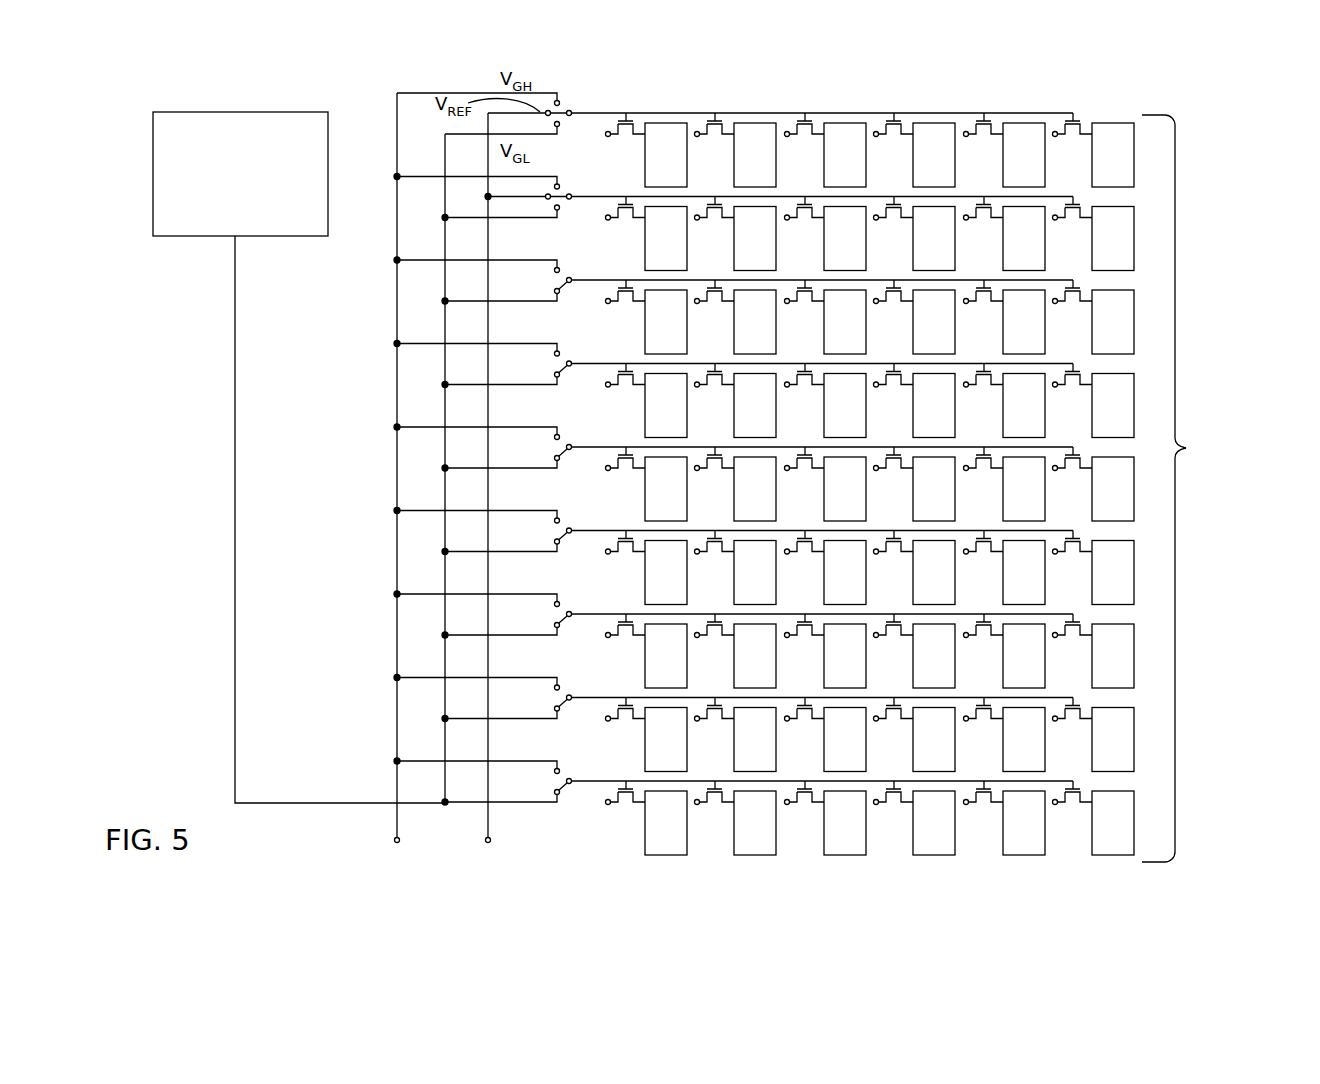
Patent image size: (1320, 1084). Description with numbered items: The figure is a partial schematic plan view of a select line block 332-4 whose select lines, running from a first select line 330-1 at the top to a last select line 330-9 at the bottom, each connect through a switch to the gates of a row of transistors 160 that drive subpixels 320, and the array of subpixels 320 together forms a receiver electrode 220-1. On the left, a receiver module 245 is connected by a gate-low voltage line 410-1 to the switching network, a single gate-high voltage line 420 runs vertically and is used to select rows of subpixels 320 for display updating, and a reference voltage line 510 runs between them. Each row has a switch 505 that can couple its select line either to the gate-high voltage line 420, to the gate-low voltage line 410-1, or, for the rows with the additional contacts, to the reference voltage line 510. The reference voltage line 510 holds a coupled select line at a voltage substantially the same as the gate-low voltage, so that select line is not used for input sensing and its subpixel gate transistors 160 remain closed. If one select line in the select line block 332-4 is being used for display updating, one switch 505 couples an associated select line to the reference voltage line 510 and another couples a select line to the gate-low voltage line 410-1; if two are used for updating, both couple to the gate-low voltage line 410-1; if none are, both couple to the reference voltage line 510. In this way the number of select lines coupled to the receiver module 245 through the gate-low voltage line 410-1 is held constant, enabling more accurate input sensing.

The receiver module 245 is at (302, 195).
The switch 505 is at (572, 101).
The select line 330-1 is at (695, 113).
The transistor 160 is at (773, 105).
The subpixel 320 is at (1113, 132).
The receiver electrode 220-1 is at (842, 462).
The select line block 332-4 is at (1195, 488).
The VGL line 410-1 is at (291, 803).
The VGH line 420 is at (399, 816).
The VREF line 510 is at (490, 816).
The select line 330-9 is at (821, 817).